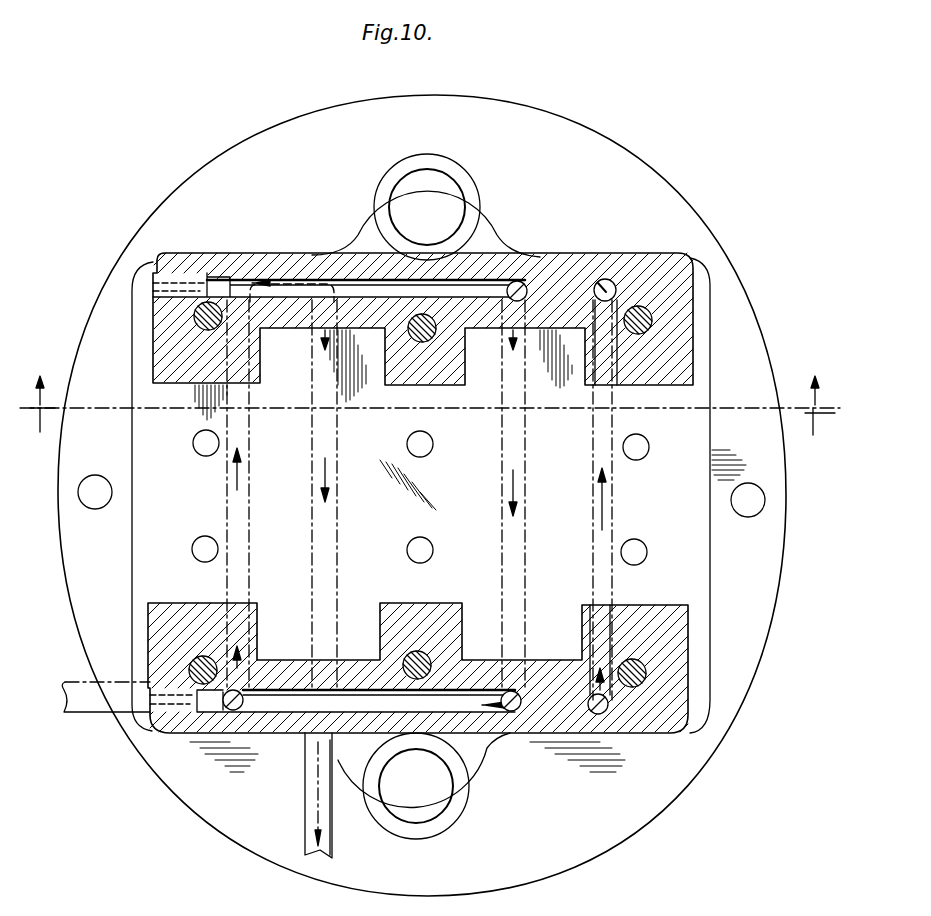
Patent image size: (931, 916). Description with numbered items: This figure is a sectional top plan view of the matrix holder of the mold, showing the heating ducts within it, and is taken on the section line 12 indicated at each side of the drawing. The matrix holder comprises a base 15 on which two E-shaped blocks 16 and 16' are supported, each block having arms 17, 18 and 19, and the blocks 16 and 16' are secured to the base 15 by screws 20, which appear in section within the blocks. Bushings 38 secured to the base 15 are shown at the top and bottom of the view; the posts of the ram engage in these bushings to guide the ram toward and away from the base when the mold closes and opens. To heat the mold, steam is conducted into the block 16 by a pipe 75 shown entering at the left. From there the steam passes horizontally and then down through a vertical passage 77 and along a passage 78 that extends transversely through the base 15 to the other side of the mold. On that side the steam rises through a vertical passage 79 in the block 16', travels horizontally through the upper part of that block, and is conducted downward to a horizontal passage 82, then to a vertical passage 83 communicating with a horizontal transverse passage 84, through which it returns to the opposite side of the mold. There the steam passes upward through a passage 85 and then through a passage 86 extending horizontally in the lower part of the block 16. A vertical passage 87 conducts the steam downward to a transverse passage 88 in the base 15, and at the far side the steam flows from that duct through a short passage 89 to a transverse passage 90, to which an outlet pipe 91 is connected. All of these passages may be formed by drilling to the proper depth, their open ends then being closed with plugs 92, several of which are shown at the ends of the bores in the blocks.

The section line 12- 12 is at (429, 408).
The base 15 is at (200, 807).
The E-shaped block 16 is at (445, 668).
The E-shaped block 16' is at (423, 303).
The arm 17 is at (177, 375).
The arm 18 is at (448, 373).
The arm 19 is at (690, 375).
The screws 20 is at (198, 322).
The bushings 38 is at (468, 212).
The pipe 75 is at (78, 707).
The vertical passage 77 is at (607, 710).
The passage 78 is at (598, 477).
The vertical passage 79 is at (608, 283).
The horizontal passage 82 is at (364, 290).
The vertical passage 83 is at (521, 288).
The horizontal transverse passage 84 is at (510, 423).
The passage 85 is at (520, 697).
The passage 86 is at (353, 700).
The vertical passage 87 is at (240, 703).
The transverse passage 88 is at (240, 577).
The short passage 89 is at (278, 292).
The transverse passage 90 is at (318, 473).
The outlet pipe 91 is at (310, 783).
The plugs 92 is at (142, 282).